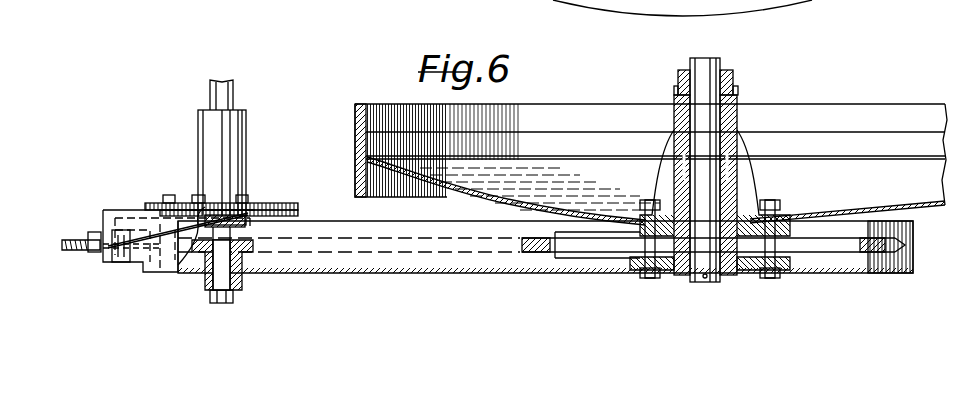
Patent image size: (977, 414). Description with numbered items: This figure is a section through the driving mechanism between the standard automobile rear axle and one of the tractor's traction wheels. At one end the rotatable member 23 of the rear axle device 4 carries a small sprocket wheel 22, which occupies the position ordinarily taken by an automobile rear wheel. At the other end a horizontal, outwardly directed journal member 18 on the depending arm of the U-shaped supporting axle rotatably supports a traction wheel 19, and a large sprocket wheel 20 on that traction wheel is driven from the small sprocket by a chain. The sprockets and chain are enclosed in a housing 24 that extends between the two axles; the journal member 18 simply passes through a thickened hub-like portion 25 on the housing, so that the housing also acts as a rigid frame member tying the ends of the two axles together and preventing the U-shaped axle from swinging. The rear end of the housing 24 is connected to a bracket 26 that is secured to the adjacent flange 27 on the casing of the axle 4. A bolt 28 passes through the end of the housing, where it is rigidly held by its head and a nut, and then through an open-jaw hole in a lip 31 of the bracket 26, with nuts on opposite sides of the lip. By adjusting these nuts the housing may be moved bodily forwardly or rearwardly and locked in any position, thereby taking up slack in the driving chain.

The rear axle device 4 is at (246, 142).
The journal member 18 is at (720, 63).
The traction wheel 19 is at (845, 113).
The large sprocket wheel 20 is at (572, 244).
The small sprocket wheel 22 is at (253, 240).
The rotatable member 23 is at (228, 96).
The housing 24 is at (430, 271).
The hub-like portion 25 is at (727, 270).
The bracket 26 is at (107, 212).
The flange 27 is at (183, 202).
The bolt 28 is at (64, 240).
The lip 31 is at (110, 262).